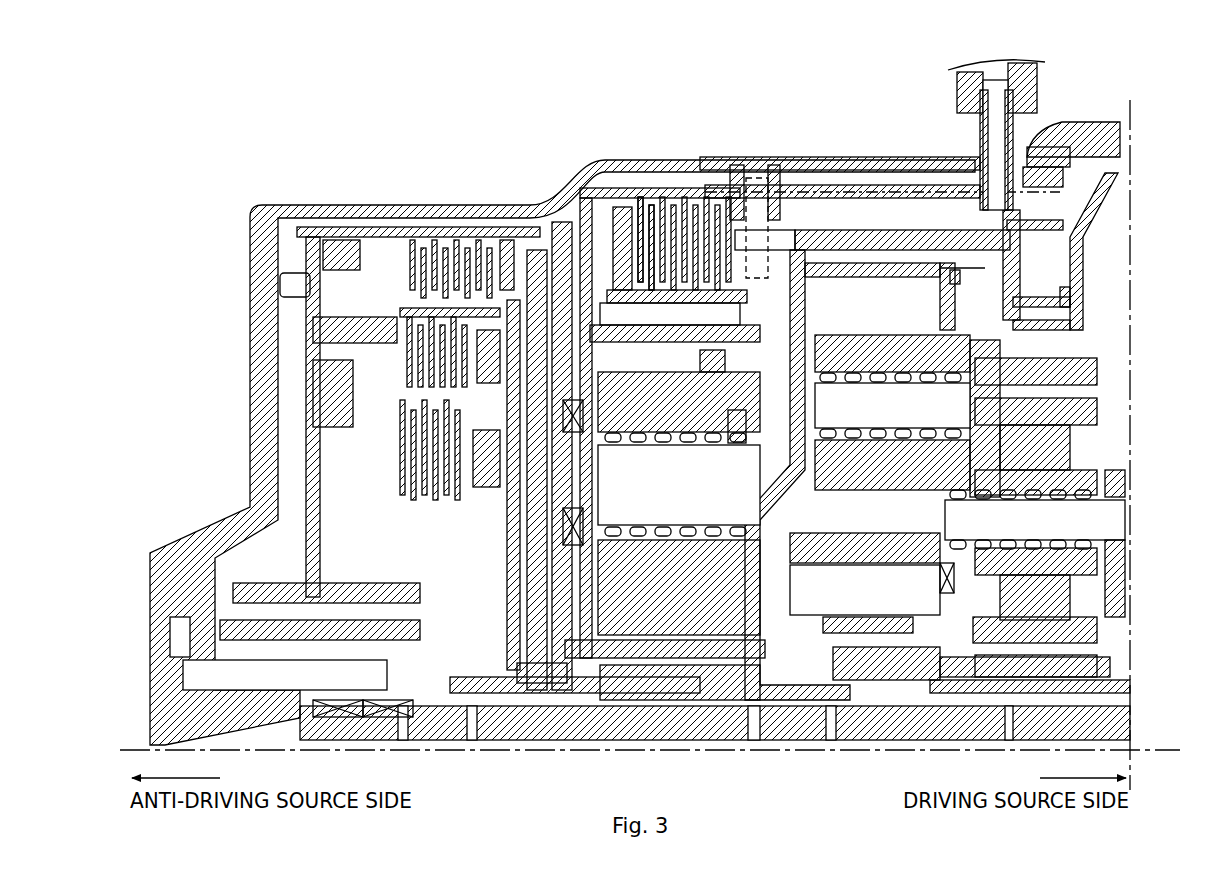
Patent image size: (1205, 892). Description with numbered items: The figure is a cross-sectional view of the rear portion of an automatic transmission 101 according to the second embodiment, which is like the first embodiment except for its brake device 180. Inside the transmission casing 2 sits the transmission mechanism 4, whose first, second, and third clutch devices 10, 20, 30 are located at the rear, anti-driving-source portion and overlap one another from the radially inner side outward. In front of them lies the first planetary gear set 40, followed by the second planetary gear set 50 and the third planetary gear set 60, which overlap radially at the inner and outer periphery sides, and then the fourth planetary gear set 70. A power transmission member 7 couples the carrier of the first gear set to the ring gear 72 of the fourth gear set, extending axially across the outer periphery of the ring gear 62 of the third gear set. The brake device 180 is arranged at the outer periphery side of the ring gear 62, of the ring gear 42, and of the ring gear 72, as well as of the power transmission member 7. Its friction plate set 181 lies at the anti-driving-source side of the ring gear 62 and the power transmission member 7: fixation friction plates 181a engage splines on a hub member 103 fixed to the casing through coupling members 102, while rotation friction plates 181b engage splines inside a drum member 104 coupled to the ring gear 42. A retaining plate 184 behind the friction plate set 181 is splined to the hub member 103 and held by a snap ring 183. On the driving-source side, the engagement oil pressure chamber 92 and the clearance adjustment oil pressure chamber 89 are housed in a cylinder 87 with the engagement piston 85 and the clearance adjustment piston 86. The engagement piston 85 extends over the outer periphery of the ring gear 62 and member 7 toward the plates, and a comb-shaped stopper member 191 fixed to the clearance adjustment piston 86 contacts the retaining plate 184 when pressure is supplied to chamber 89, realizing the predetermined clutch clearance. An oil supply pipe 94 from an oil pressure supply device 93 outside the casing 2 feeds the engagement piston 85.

The automatic transmission 101 is at (205, 175).
The third clutch device 30 is at (428, 226).
The second clutch device 20 is at (512, 328).
The first clutch device 10 is at (505, 463).
The drum member 104 is at (597, 200).
The retaining plate 184 is at (607, 230).
The friction plate set 181 is at (738, 211).
The fixation friction plates 181a is at (655, 205).
The rotation friction plates 181b is at (640, 197).
The snap ring 183 is at (600, 338).
The hub member 103 is at (742, 342).
The ring gear 42 is at (723, 396).
The coupling members 102 is at (776, 166).
The transmission casing 2 is at (840, 157).
The stopper member 191 is at (870, 186).
The power transmission member 7 is at (847, 262).
The ring gear 62 is at (945, 300).
The engagement oil pressure chamber 92 is at (990, 222).
The engagement piston 85 is at (978, 250).
The clearance adjustment oil pressure chamber 89 is at (1063, 260).
The clearance adjustment piston 86 is at (1023, 283).
The cylinder 87 is at (1107, 192).
The brake device 180 is at (1113, 175).
The oil pressure supply device 93 is at (1023, 67).
The oil supply pipe 94 is at (1037, 92).
The third planetary gear set 60 is at (975, 443).
The ring gear 72 is at (1097, 370).
The fourth planetary gear set 70 is at (1103, 405).
The transmission mechanism 4 is at (1105, 347).
The second planetary gear set 50 is at (937, 642).
The first planetary gear set 40 is at (735, 667).